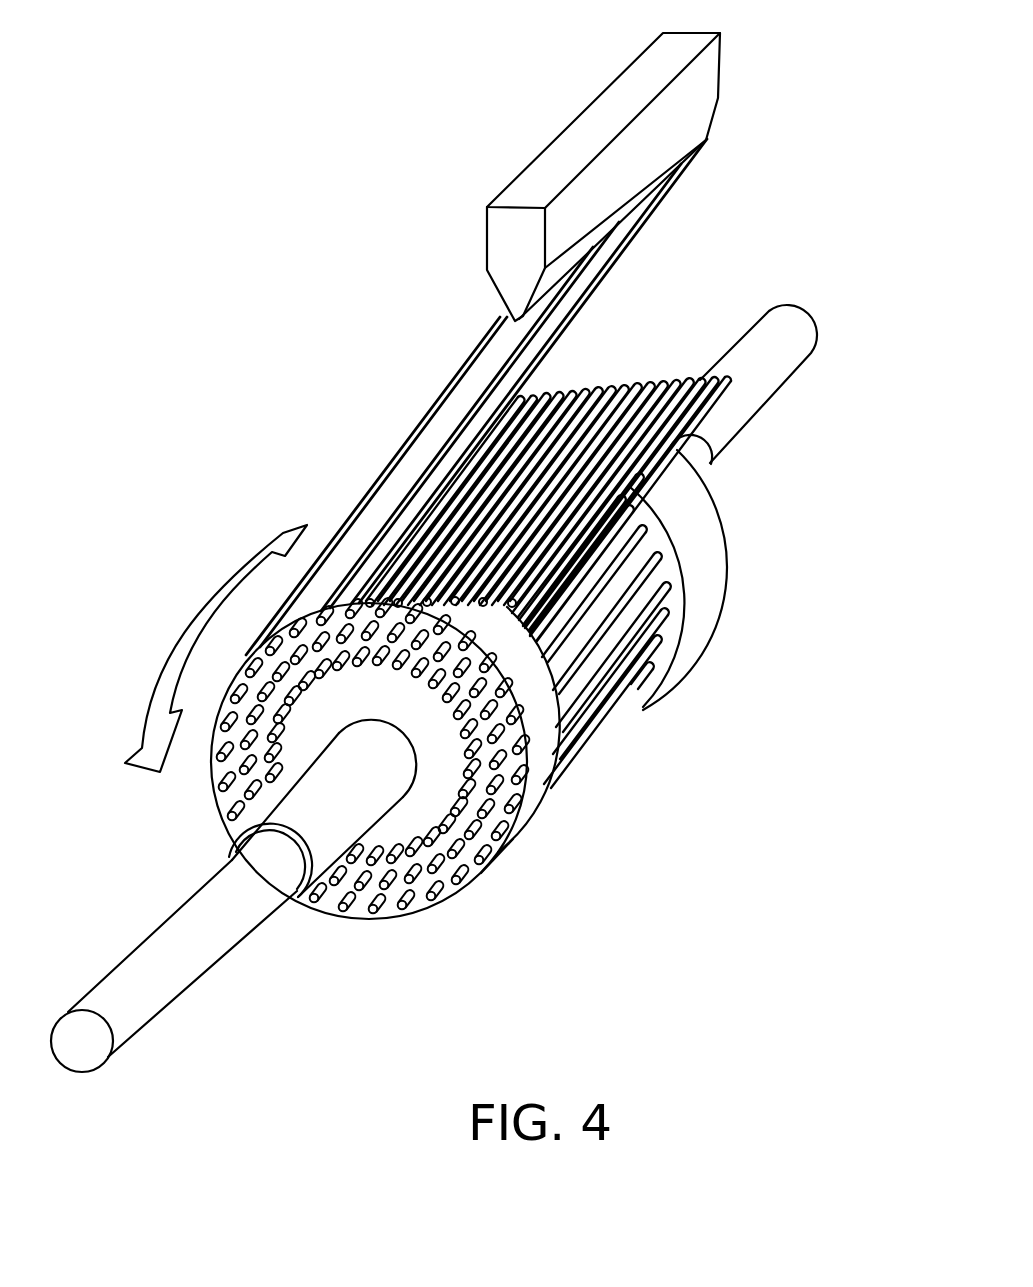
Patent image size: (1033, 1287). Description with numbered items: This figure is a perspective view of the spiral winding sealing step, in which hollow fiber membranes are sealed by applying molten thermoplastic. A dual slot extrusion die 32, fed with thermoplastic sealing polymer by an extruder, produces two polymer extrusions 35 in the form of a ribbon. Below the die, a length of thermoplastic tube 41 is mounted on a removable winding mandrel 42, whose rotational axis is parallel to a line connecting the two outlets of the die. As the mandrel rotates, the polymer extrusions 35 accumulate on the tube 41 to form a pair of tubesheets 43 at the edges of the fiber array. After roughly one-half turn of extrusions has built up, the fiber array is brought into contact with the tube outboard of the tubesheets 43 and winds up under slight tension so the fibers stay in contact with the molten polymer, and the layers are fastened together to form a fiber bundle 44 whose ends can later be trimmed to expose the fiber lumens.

The dual slot extrusion die 32 is at (724, 72).
The polymer extrusions 35 is at (552, 337).
The thermoplastic tube 41 is at (342, 820).
The winding mandrel 42 is at (155, 1017).
The tubesheets 43 is at (717, 580).
The fiber bundle 44 is at (672, 708).